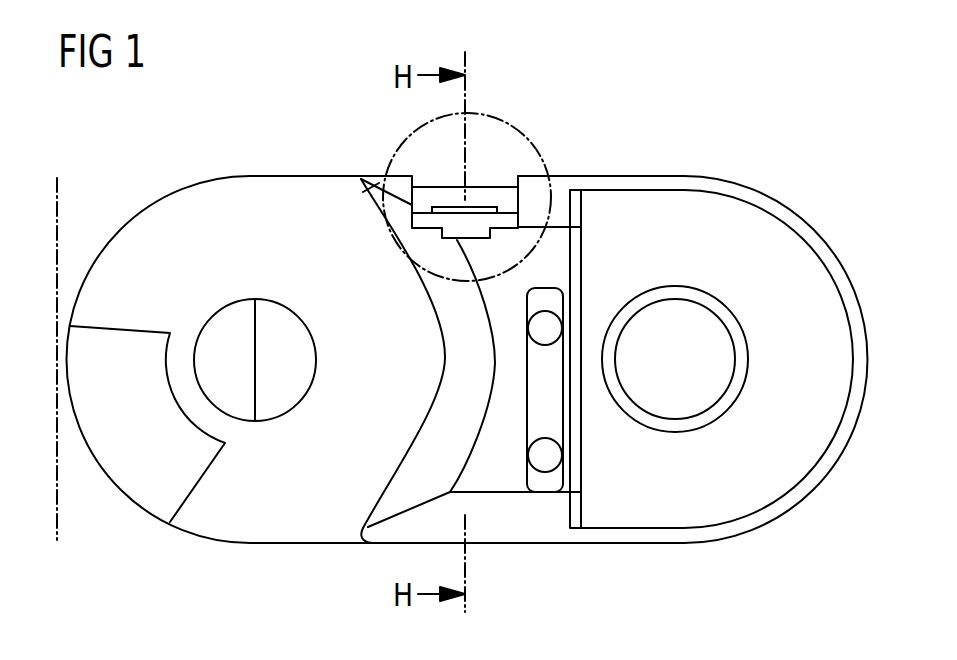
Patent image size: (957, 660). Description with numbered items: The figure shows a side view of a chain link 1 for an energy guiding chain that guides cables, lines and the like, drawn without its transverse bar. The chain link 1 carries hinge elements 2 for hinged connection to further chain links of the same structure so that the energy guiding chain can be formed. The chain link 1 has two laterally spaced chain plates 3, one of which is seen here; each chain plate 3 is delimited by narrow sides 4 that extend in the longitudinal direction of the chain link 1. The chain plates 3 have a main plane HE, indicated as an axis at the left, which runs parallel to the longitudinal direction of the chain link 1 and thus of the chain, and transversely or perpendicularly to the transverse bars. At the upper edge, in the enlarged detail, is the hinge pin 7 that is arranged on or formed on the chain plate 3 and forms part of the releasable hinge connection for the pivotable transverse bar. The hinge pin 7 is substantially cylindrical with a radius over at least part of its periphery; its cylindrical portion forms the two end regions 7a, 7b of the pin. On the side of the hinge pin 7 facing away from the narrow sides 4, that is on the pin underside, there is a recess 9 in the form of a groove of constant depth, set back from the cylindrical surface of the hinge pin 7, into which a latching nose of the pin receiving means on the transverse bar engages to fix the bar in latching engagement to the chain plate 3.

The chain link 1 is at (786, 172).
The hinge element 2 is at (222, 326).
The chain plate 3 is at (762, 480).
The narrow side 4 is at (314, 170).
The hinge pin 7 is at (480, 197).
The end region of the hinge pin 7a is at (506, 197).
The end region of the hinge pin 7b is at (434, 197).
The recess 9 is at (440, 210).
The main plane HE is at (58, 200).